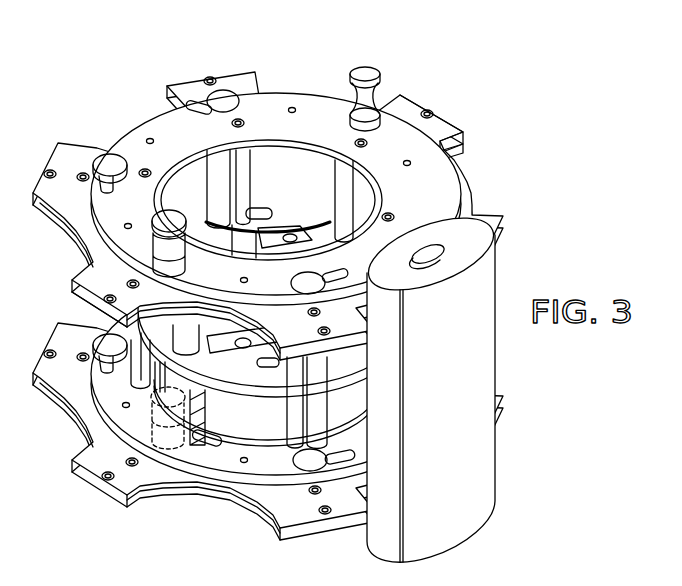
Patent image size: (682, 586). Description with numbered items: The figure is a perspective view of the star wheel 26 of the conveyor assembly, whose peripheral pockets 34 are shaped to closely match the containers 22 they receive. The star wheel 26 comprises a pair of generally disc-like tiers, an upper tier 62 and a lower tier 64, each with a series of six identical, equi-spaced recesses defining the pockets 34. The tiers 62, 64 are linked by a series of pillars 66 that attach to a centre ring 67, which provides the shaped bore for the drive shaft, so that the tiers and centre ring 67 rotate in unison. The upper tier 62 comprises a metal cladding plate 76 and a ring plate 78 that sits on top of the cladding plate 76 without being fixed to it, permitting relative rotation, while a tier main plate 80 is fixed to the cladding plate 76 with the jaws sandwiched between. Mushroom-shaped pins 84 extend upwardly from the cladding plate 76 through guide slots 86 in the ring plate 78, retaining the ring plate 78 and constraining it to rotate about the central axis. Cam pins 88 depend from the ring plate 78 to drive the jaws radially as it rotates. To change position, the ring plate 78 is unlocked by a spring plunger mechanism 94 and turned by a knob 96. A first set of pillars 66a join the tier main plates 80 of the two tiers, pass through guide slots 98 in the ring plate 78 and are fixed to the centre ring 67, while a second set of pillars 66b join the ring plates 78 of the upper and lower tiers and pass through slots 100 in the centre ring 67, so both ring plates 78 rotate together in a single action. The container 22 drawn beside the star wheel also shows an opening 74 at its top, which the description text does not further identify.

The container 22 is at (431, 382).
The star wheel 26 is at (275, 290).
The pocket 34 is at (113, 117).
The upper tier 62 is at (470, 174).
The lower tier 64 is at (265, 386).
The pillars 66 is at (293, 425).
The first set of pillars 66a is at (217, 173).
The second set of pillars 66b is at (241, 173).
The centre ring 67 is at (207, 374).
The housing aperture 74 is at (432, 256).
The cladding plate 76 is at (83, 278).
The ring plate 78 is at (277, 466).
The tier main plate 80 is at (73, 297).
The mushroom-shaped pins 84 is at (238, 105).
The guide slots 86 is at (197, 106).
The cam pins 88 is at (143, 180).
The spring plunger mechanism 94 is at (183, 262).
The knob 96 is at (368, 72).
The guide slots 98 is at (327, 433).
The slots 100 is at (268, 218).